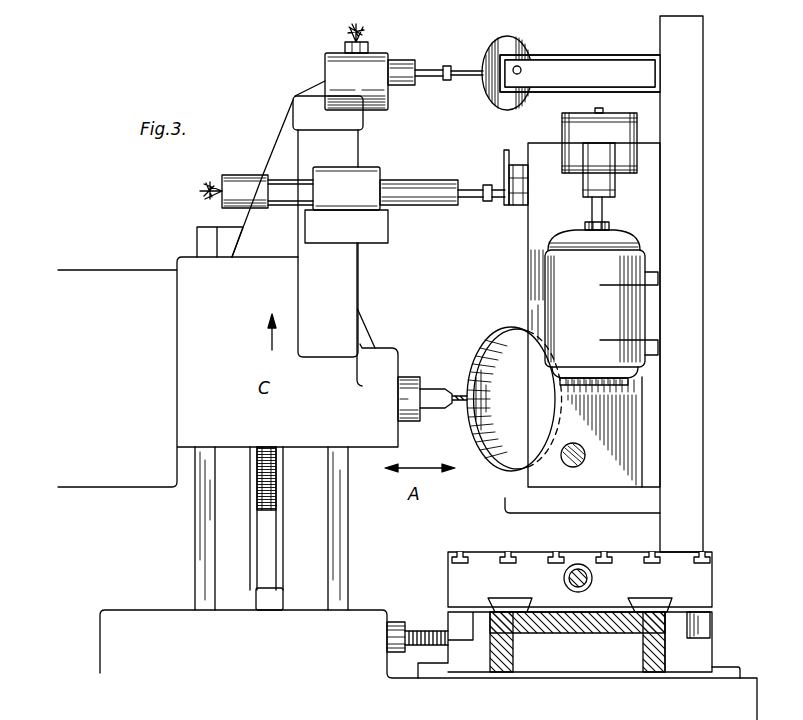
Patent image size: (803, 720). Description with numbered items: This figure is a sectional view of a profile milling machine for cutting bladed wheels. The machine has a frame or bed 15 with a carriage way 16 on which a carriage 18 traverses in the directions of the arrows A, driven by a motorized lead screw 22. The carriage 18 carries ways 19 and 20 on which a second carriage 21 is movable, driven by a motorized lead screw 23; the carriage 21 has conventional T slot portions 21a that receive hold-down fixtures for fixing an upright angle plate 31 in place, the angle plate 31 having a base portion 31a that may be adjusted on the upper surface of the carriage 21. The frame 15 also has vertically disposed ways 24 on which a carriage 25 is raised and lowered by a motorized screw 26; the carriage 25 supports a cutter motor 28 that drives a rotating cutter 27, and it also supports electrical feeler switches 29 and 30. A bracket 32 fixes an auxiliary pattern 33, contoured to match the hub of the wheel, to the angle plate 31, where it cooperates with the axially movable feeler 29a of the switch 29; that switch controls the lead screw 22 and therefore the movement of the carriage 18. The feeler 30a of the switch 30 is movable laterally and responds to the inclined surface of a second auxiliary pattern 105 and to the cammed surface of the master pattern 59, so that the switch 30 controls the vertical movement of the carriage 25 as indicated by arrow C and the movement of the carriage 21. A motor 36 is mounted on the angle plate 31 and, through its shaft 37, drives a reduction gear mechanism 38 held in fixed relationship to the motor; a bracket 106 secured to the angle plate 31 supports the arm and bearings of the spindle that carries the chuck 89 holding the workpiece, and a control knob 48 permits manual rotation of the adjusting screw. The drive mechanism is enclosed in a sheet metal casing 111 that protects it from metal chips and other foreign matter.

The frame or bed 15 is at (388, 660).
The carriage way 16 is at (727, 667).
The carriage 18 is at (713, 628).
The way 19 is at (648, 603).
The way 20 is at (515, 590).
The carriage 21 is at (708, 580).
The T slot portions 21a is at (553, 552).
The motorized lead screw 22 is at (432, 628).
The motorized lead screw 23 is at (592, 578).
The vertically disposed ways 24 is at (235, 603).
The carriage 25 is at (192, 262).
The motorized screw 26 is at (283, 495).
The rotating cutter 27 is at (465, 388).
The cutter motor 28 is at (385, 348).
The electrical feeler switch 29 is at (437, 80).
The feeler 29a is at (472, 66).
The electrical feeler switch 30 is at (470, 184).
The feeler 30a is at (497, 185).
The upright angle plate 31 is at (703, 258).
The base portion 31a is at (605, 513).
The bracket 32 is at (590, 60).
The auxiliary pattern 33 is at (522, 42).
The motor 36 is at (586, 301).
The shaft 37 is at (602, 217).
The reduction gear mechanism 38 is at (608, 118).
The control knob 48 is at (583, 463).
The master pattern 59 is at (506, 205).
The chuck 89 is at (506, 333).
The second auxiliary pattern 105 is at (518, 158).
The bracket 106 is at (638, 394).
The sheet metal casing 111 is at (528, 263).